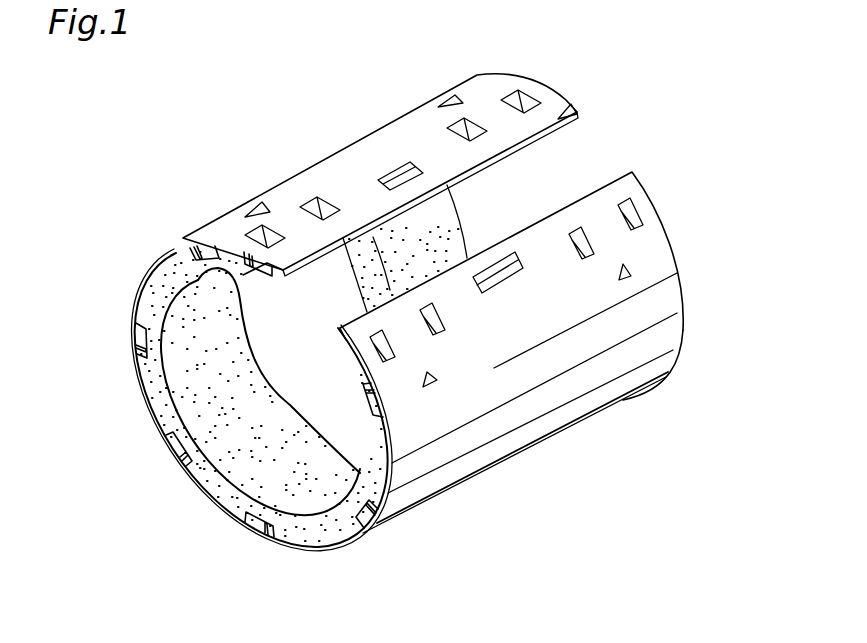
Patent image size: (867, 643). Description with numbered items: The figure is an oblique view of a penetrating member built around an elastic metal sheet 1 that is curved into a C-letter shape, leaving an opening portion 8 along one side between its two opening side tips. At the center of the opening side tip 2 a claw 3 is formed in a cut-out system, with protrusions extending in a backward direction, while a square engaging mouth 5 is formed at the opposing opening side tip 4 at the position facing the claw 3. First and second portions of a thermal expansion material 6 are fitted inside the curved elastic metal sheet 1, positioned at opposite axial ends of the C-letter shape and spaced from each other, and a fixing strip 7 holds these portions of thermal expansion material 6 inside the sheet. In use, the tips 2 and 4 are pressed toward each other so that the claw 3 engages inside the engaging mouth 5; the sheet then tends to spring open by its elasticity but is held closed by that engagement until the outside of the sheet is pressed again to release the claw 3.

The elastic metal sheet 1 is at (557, 398).
The opening side tip 2 is at (560, 97).
The claw 3 is at (367, 190).
The opening side tip 4 is at (607, 180).
The engaging mouth 5 is at (513, 282).
The thermal expansion material 6 is at (440, 233).
The fixing strip 7 is at (200, 253).
The opening portion 8 is at (315, 305).